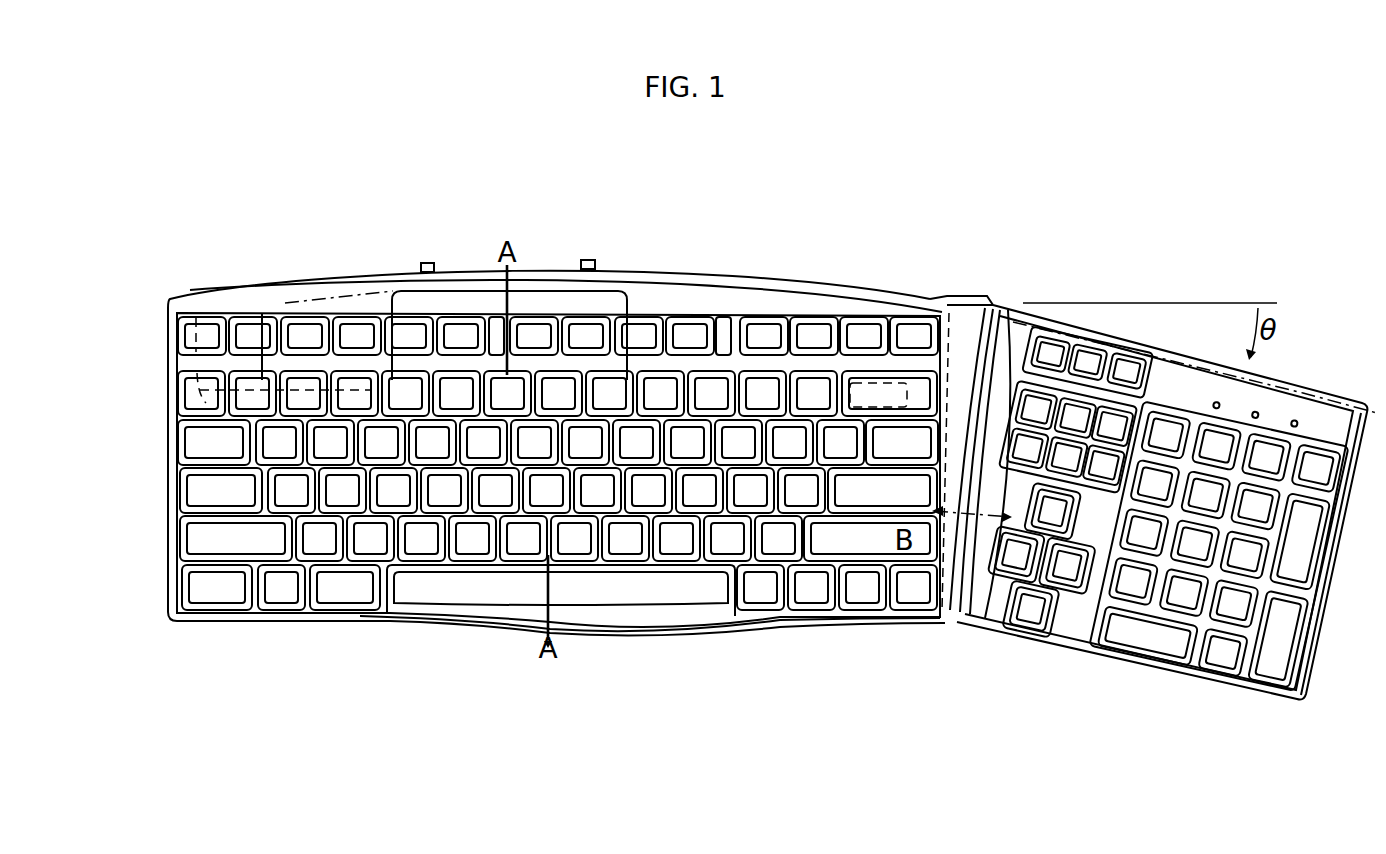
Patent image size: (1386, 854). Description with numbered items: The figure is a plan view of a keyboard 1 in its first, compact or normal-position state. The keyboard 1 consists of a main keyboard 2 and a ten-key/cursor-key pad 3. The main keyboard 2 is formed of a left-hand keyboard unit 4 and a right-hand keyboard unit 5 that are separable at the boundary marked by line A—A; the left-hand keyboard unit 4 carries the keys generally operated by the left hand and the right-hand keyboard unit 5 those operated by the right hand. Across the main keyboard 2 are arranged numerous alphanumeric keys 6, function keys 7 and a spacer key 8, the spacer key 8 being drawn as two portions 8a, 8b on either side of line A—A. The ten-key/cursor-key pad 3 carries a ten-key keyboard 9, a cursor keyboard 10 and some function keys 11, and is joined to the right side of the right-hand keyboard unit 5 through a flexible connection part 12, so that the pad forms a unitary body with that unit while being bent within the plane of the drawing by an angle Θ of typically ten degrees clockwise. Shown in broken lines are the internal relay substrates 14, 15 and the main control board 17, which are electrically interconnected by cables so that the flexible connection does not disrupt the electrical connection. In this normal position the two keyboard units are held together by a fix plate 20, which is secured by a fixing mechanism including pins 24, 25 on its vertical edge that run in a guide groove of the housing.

The keyboard 1 is at (949, 183).
The main keyboard 2 is at (890, 753).
The ten-key/cursor-key pad 3 is at (1297, 773).
The left-hand keyboard unit 4 is at (175, 698).
The right-hand keyboard unit 5 is at (947, 698).
The alphanumeric keys 6 is at (740, 443).
The function keys 7 is at (640, 335).
The spacer key 8 is at (561, 621).
The left space key 8a is at (468, 588).
The right space key 8b is at (633, 588).
The ten-key keyboard 9 is at (1200, 550).
The cursor keyboard 10 is at (1055, 518).
The function keys 11 is at (1125, 362).
The connection part 12 is at (960, 581).
The relay substrate 14 is at (196, 300).
The relay substrate 15 is at (903, 400).
The main control board 17 is at (1290, 395).
The fix plate 20 is at (330, 300).
The pin 24 is at (427, 263).
The pin 25 is at (587, 260).